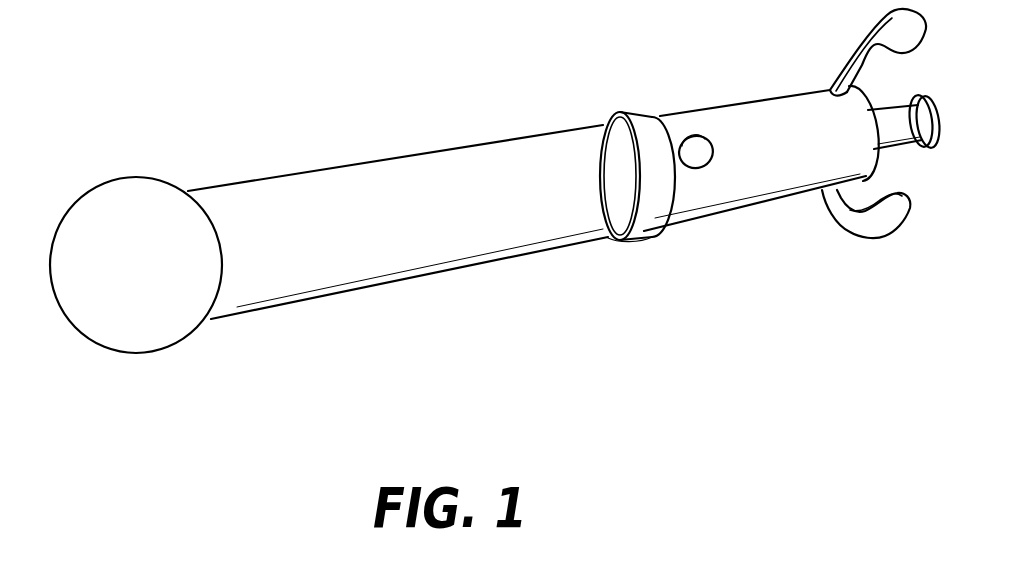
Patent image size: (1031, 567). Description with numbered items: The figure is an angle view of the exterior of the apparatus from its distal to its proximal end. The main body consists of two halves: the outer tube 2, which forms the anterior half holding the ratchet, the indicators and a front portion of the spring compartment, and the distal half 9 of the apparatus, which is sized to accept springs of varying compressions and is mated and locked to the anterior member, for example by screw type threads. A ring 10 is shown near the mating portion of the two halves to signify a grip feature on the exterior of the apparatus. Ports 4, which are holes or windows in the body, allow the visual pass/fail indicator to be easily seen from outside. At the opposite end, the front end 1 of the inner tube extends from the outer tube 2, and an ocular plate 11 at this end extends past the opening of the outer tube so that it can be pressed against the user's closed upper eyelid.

The front end of the inner tube 1 is at (907, 128).
The outer tube 2 is at (560, 125).
The ports 4 is at (693, 152).
The distal half of the apparatus 9 is at (247, 192).
The ring 10 is at (653, 217).
The ocular plate 11 is at (940, 113).